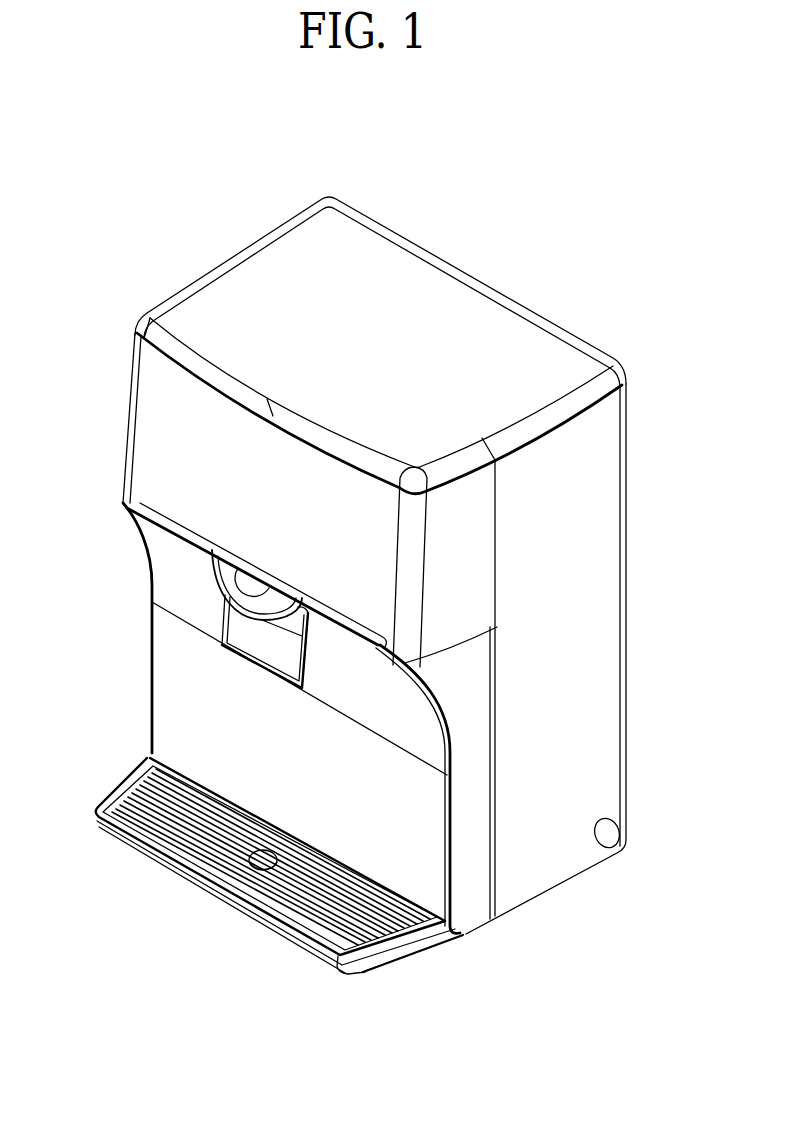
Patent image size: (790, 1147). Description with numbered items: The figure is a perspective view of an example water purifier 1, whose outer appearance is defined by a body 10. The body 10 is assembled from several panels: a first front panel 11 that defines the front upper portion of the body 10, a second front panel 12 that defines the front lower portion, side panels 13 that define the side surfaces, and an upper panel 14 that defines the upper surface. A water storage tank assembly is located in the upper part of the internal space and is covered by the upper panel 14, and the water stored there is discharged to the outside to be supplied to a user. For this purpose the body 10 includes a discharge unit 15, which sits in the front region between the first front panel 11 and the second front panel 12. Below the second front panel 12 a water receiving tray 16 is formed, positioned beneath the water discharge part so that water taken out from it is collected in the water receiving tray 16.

The water purifier 1 is at (137, 196).
The body 10 is at (490, 285).
The first front panel 11 is at (153, 413).
The second front panel 12 is at (173, 672).
The side panel 13 is at (603, 553).
The upper panel 14 is at (240, 264).
The discharge unit 15 is at (235, 623).
The water receiving tray 16 is at (127, 793).